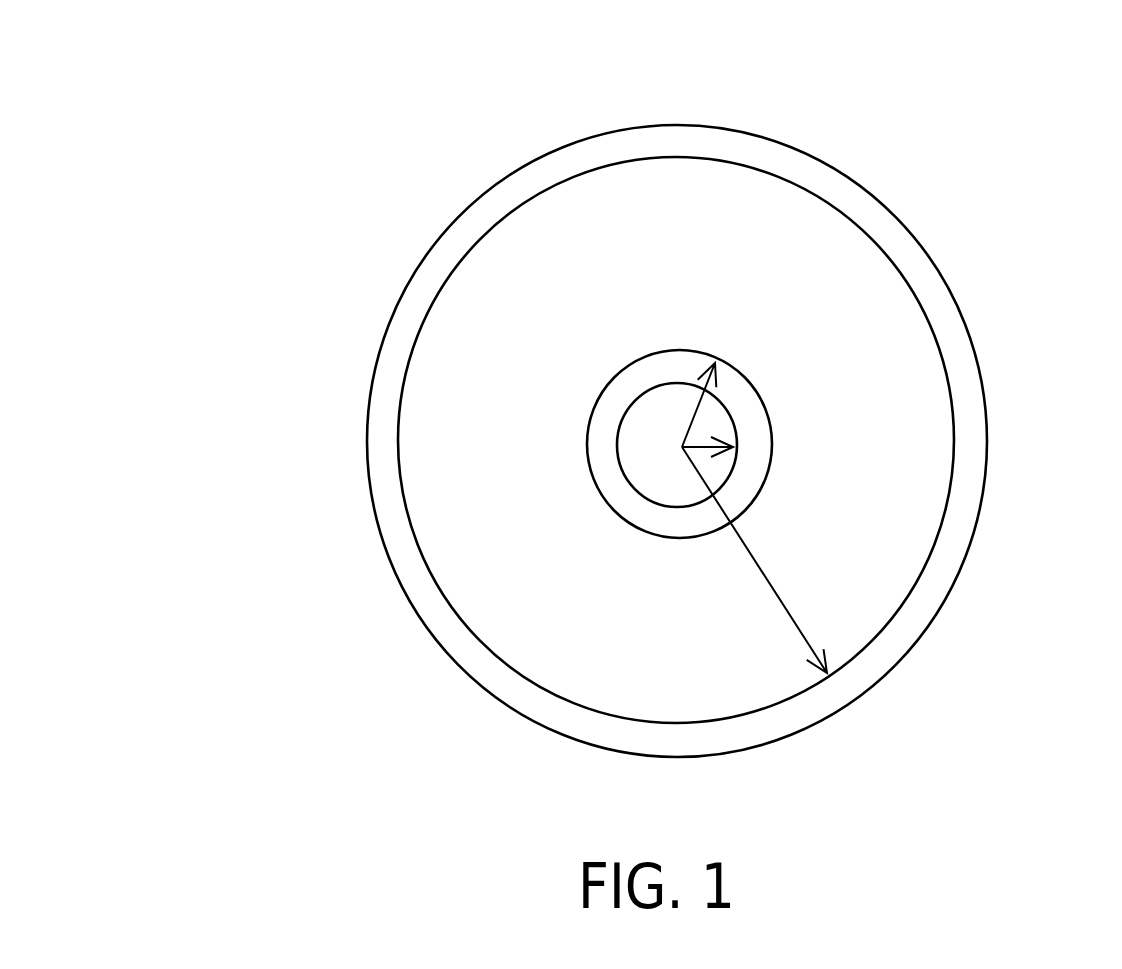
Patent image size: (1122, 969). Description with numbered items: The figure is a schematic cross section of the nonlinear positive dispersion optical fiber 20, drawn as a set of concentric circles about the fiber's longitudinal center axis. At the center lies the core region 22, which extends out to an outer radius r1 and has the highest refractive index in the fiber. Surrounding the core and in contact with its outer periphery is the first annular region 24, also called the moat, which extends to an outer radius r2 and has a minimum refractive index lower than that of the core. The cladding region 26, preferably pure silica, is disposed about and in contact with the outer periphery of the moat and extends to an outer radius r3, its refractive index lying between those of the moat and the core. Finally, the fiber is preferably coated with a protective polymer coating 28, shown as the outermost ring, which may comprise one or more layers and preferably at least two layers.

The nonlinear positive dispersion optical fiber 20 is at (626, 393).
The core region 22 is at (633, 403).
The first annular region 24 is at (587, 450).
The cladding region 26 is at (953, 427).
The protective polymer coating 28 is at (818, 157).
The outer radius of core region r1 is at (703, 453).
The outer radius of first annular region r2 is at (702, 412).
The outer radius of cladding region r3 is at (697, 560).